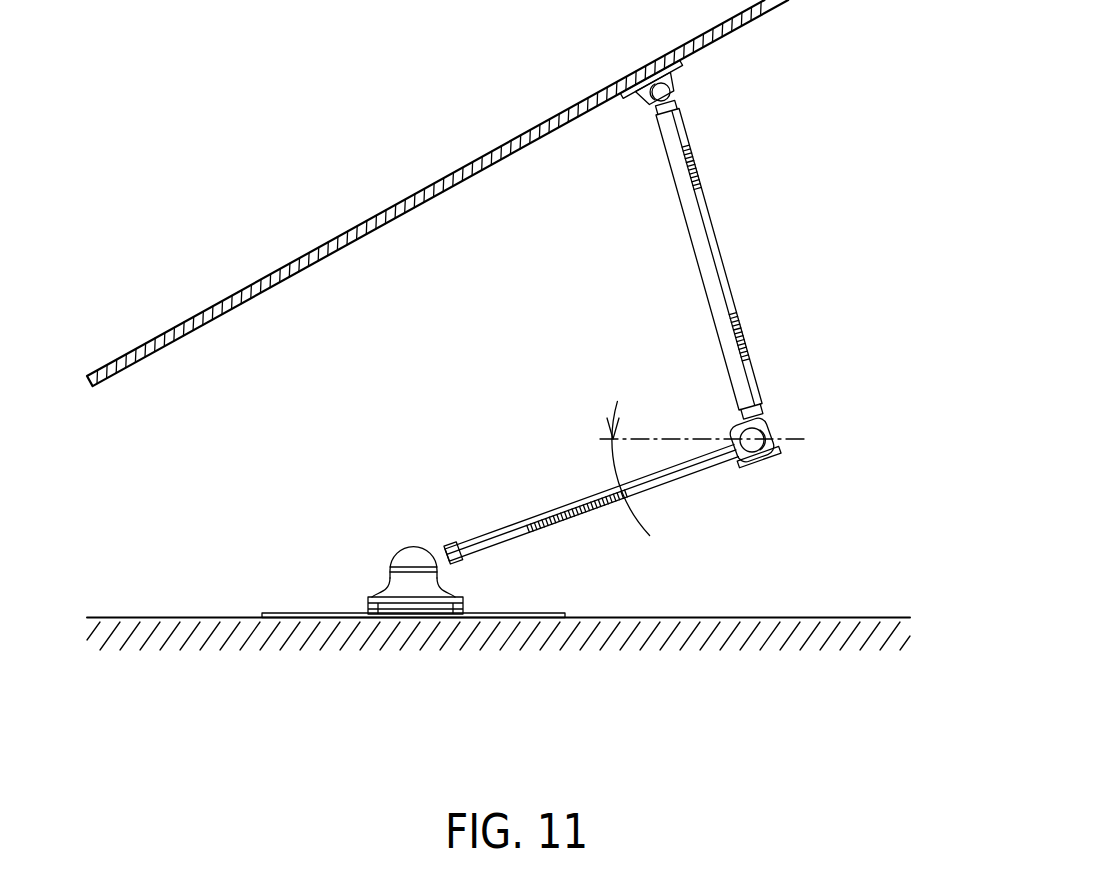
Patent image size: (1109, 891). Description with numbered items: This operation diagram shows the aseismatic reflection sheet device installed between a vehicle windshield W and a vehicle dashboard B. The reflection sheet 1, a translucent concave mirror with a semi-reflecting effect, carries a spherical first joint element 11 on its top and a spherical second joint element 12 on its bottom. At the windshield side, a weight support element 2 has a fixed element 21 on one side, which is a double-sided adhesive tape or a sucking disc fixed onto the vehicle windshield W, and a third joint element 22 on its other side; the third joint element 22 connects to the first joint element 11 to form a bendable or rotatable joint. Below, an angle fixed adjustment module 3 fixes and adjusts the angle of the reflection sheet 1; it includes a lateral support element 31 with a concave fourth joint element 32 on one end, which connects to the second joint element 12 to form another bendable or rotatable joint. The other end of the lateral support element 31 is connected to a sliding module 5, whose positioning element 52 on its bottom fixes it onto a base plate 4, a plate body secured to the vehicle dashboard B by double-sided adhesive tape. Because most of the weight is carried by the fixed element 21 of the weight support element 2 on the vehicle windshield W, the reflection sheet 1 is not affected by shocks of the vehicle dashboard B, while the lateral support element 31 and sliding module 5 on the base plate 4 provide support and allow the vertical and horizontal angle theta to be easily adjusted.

The vehicle windshield W is at (400, 203).
The weight support element 2 is at (665, 135).
The fixed element 21 is at (617, 99).
The third joint element 22 is at (635, 111).
The first joint element 11 is at (697, 86).
The reflection sheet 1 is at (712, 232).
The second joint element 12 is at (826, 400).
The fourth joint element 32 is at (782, 437).
The angle fixed adjustment module 3 is at (591, 468).
The lateral support element 31 is at (527, 523).
The vertical and horizontal angle theta is at (696, 468).
The sliding module 5 is at (409, 537).
The positioning element 52 is at (363, 613).
The base plate 4 is at (293, 617).
The vehicle dashboard B is at (498, 558).